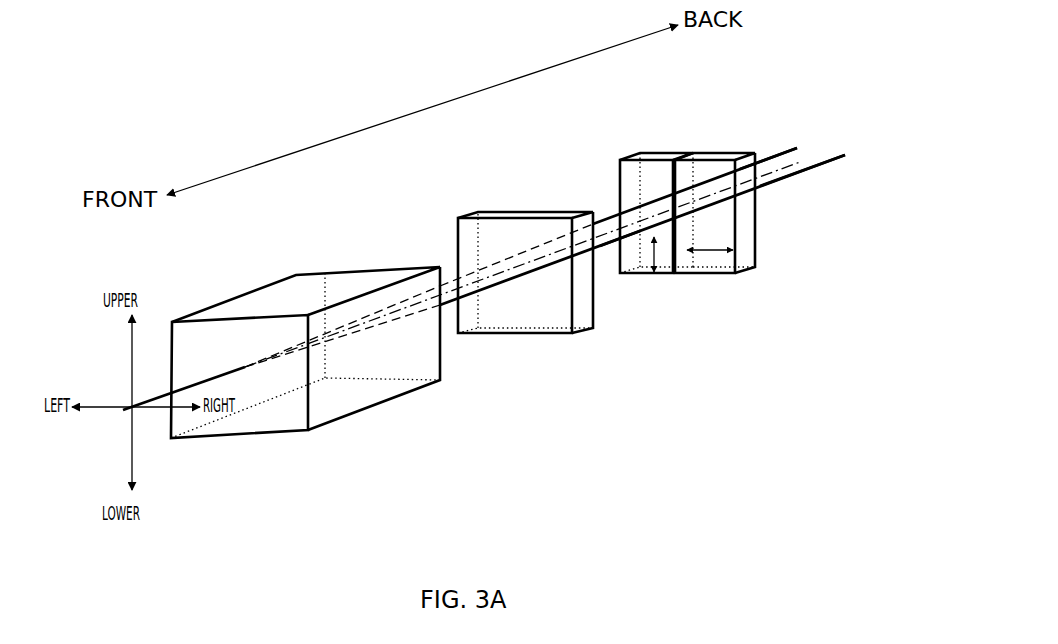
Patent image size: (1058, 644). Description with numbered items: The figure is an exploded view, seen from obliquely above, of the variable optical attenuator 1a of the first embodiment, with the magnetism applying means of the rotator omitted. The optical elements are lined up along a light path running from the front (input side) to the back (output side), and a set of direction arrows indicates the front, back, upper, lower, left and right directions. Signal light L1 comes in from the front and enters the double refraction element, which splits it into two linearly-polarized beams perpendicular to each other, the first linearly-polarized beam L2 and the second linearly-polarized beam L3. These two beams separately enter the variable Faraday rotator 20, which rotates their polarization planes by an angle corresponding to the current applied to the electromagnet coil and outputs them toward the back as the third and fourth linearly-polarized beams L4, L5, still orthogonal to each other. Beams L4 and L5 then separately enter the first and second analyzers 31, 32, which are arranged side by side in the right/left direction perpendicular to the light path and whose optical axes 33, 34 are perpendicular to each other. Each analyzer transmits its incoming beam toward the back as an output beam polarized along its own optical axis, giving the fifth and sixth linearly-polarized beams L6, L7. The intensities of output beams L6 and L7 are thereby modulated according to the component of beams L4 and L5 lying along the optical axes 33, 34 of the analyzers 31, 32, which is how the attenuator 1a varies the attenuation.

The variable optical attenuator 1a is at (553, 372).
The variable Faraday rotator 20 is at (517, 217).
The first analyzer 31 is at (667, 157).
The second analyzer 32 is at (723, 157).
The optical axis of the first analyzer 33 is at (657, 257).
The optical axis of the second analyzer 34 is at (715, 257).
The signal light L1 is at (157, 395).
The first linearly-polarized beam L2 is at (450, 277).
The second linearly-polarized beam L3 is at (472, 297).
The third linearly-polarized beam L4 is at (610, 222).
The fourth linearly-polarized beam L5 is at (620, 248).
The fifth linearly-polarized beam L6 is at (775, 155).
The sixth linearly-polarized beam L7 is at (775, 185).